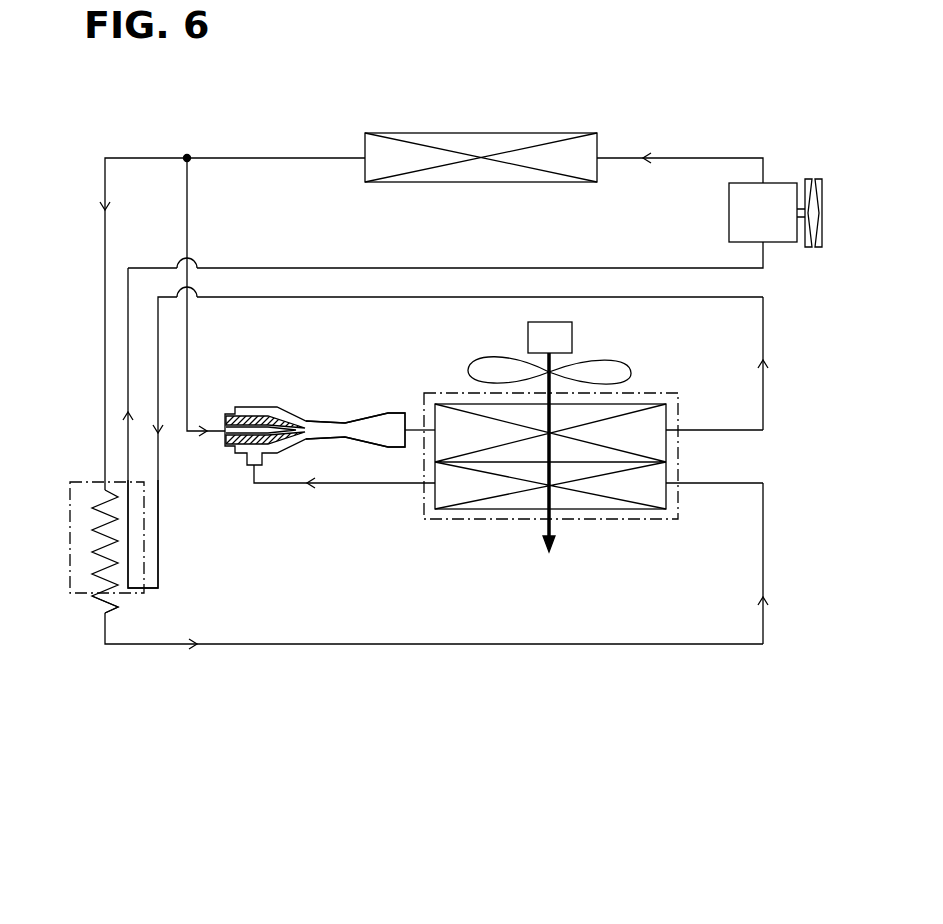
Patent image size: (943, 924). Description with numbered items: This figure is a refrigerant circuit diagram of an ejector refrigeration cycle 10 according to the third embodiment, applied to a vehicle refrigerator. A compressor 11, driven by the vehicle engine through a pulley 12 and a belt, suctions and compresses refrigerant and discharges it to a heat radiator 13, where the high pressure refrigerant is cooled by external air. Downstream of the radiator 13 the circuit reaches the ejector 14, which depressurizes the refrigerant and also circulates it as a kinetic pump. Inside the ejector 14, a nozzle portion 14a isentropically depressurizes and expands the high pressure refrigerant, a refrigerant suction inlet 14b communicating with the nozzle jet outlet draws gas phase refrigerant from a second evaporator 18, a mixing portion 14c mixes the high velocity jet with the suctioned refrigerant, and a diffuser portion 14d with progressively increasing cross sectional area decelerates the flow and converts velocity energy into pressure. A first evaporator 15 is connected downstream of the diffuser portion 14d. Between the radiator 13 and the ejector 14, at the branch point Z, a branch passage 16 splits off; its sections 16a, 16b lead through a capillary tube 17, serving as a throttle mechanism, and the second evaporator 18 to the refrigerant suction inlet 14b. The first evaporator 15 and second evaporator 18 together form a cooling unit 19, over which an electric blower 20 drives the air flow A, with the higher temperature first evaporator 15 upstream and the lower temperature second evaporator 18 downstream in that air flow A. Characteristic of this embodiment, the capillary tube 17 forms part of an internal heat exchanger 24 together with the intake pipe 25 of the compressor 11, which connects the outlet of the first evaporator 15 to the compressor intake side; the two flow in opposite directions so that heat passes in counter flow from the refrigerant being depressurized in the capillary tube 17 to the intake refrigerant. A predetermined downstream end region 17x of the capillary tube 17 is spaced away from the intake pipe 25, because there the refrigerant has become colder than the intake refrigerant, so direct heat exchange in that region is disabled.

The ejector refrigeration cycle 10 is at (699, 134).
The compressor 11 is at (781, 183).
The pulley 12 is at (822, 205).
The heat radiator 13 is at (498, 133).
The ejector 14 is at (317, 408).
The nozzle portion 14a is at (273, 420).
The refrigerant suction inlet 14b is at (247, 459).
The mixing portion 14c is at (322, 427).
The diffuser portion 14d is at (392, 425).
The first evaporator 15 is at (643, 423).
The branch passage 16 is at (103, 241).
The branch passage 16a is at (105, 310).
The return passage 16b is at (148, 648).
The capillary tube 17 is at (92, 542).
The predetermined downstream end region 17x is at (100, 611).
The second evaporator 18 is at (643, 487).
The cooling unit 19 is at (680, 495).
The electric blower 20 is at (615, 360).
The internal heat exchanger 24 is at (68, 491).
The intake pipe 25 is at (128, 548).
The branch point Z is at (187, 156).
The air flow A is at (558, 530).